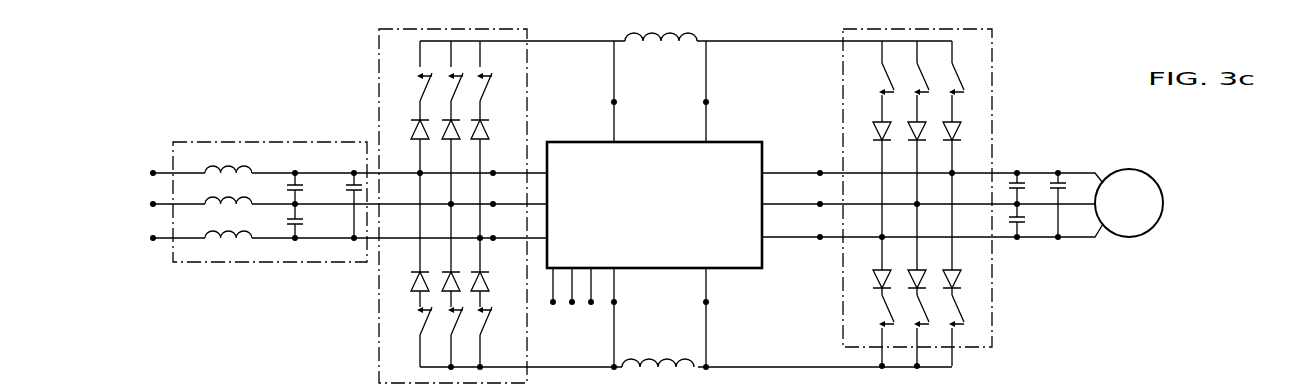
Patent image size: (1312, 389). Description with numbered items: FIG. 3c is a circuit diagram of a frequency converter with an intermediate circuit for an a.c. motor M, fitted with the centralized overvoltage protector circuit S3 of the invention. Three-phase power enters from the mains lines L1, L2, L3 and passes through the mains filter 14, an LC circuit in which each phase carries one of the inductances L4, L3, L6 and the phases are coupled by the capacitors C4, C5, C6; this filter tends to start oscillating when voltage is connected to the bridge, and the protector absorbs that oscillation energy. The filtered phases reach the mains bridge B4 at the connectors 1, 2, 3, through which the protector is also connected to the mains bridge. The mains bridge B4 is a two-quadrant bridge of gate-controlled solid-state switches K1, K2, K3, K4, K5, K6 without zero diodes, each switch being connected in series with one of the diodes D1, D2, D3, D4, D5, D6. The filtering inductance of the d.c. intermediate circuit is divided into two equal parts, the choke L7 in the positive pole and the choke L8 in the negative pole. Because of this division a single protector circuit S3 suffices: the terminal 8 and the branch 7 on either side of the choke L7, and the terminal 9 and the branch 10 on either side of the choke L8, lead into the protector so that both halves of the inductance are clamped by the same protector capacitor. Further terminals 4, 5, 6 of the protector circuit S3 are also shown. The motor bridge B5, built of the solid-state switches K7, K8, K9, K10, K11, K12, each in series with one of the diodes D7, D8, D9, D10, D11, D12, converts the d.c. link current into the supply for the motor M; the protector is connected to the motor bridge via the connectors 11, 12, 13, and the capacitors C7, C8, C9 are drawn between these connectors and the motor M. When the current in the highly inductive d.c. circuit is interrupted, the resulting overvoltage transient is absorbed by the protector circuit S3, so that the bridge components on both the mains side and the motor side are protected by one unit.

The mains filter 14 is at (243, 175).
The mains bridge B4 is at (636, 206).
The motor bridge B5 is at (943, 199).
The protector circuit S3 is at (654, 205).
The inductance L4 is at (214, 161).
The mains line L3 is at (185, 215).
The inductance L6 is at (214, 227).
The capacitor C4 is at (282, 188).
The capacitor C5 is at (340, 205).
The capacitor C6 is at (282, 222).
The choke L7 is at (661, 57).
The choke L8 is at (658, 350).
The output capacitor C7 is at (1029, 188).
The output capacitor C8 is at (1071, 205).
The output capacitor C9 is at (1029, 222).
The a.c. motor M is at (1129, 203).
The mains line L1 is at (137, 174).
The mains line L2 is at (137, 205).
The connector 1 is at (498, 162).
The connector 2 is at (498, 193).
The connector 3 is at (498, 228).
The terminal 4 is at (555, 301).
The terminal 5 is at (574, 301).
The terminal 6 is at (593, 301).
The branch 7 is at (714, 104).
The terminal 8 is at (605, 104).
The terminal 9 is at (621, 303).
The branch 10 is at (695, 303).
The connector 11 is at (810, 162).
The connector 12 is at (810, 193).
The connector 13 is at (810, 227).
The solid-state switch K1 is at (418, 87).
The solid-state switch K2 is at (429, 332).
The solid-state switch K3 is at (448, 87).
The solid-state switch K4 is at (460, 332).
The solid-state switch K5 is at (478, 87).
The solid-state switch K6 is at (489, 332).
The solid-state switch K7 is at (875, 72).
The solid-state switch K8 is at (893, 310).
The solid-state switch K9 is at (910, 72).
The solid-state switch K10 is at (930, 310).
The solid-state switch K11 is at (943, 72).
The solid-state switch K12 is at (966, 310).
The diode D1 is at (412, 145).
The diode D2 is at (412, 270).
The diode D3 is at (442, 145).
The diode D4 is at (442, 270).
The diode D5 is at (471, 145).
The diode D6 is at (471, 270).
The diode D7 is at (890, 146).
The diode D8 is at (890, 266).
The diode D9 is at (925, 146).
The diode D10 is at (927, 266).
The diode D11 is at (963, 146).
The diode D12 is at (963, 266).